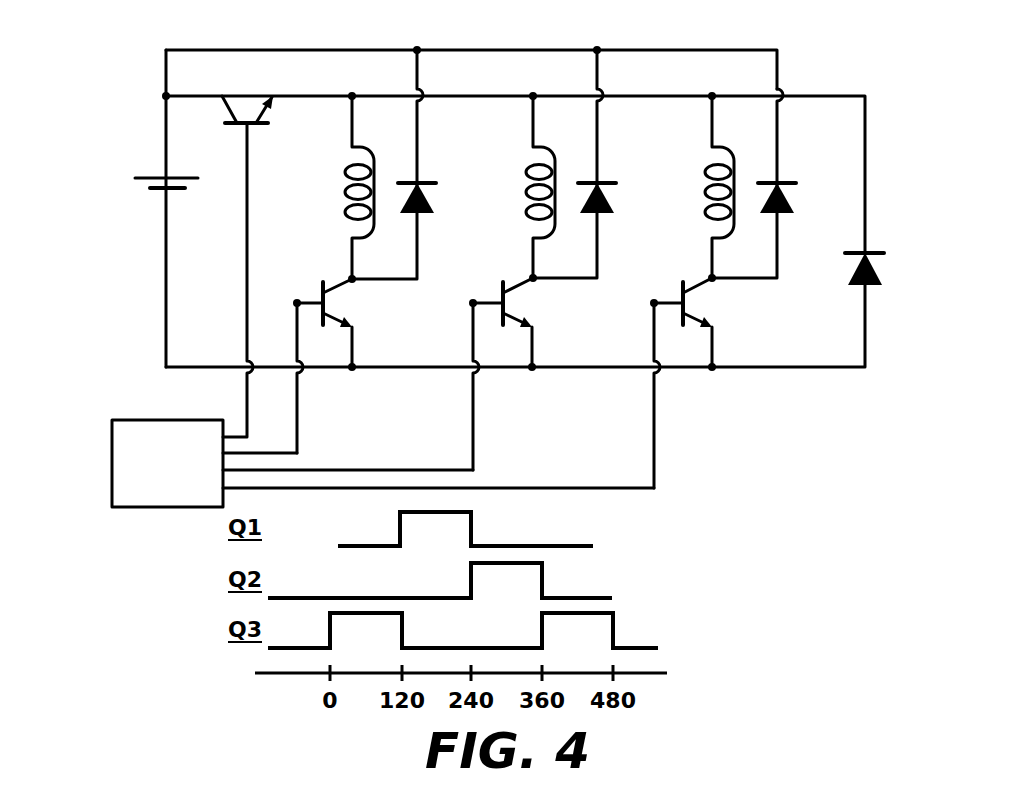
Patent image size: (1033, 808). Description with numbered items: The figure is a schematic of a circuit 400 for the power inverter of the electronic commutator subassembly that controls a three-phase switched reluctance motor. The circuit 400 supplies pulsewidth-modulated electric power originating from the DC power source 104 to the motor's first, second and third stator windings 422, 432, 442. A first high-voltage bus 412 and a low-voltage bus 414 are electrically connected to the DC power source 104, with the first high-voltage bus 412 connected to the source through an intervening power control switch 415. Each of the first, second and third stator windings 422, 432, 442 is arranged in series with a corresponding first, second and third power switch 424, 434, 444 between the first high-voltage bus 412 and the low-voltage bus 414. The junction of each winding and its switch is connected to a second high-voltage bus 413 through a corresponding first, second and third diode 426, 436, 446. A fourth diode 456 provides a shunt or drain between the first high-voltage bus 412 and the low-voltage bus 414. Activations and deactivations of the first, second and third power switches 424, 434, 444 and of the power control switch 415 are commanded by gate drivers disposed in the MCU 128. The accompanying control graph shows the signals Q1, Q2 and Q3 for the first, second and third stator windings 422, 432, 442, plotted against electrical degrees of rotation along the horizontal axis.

The circuit 400 is at (156, 60).
The DC power source 104 is at (148, 178).
The MCU 128 is at (195, 476).
The first high-voltage bus 412 is at (500, 92).
The second high-voltage bus 413 is at (500, 48).
The low-voltage bus 414 is at (240, 402).
The power control switch 415 is at (262, 128).
The first stator winding 422 is at (345, 197).
The first power switch 424 is at (321, 290).
The first diode 426 is at (421, 182).
The second stator winding 432 is at (527, 197).
The second power switch 434 is at (501, 290).
The second diode 436 is at (601, 182).
The third stator winding 442 is at (705, 197).
The third power switch 444 is at (681, 290).
The third diode 446 is at (781, 182).
The fourth diode 456 is at (870, 251).